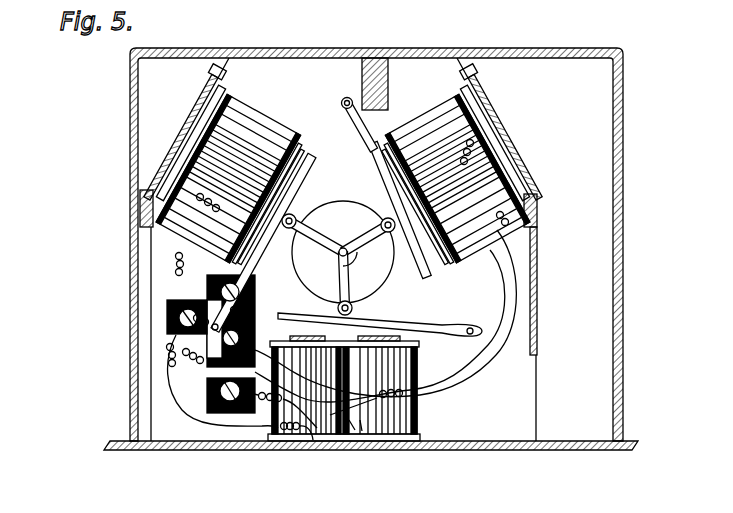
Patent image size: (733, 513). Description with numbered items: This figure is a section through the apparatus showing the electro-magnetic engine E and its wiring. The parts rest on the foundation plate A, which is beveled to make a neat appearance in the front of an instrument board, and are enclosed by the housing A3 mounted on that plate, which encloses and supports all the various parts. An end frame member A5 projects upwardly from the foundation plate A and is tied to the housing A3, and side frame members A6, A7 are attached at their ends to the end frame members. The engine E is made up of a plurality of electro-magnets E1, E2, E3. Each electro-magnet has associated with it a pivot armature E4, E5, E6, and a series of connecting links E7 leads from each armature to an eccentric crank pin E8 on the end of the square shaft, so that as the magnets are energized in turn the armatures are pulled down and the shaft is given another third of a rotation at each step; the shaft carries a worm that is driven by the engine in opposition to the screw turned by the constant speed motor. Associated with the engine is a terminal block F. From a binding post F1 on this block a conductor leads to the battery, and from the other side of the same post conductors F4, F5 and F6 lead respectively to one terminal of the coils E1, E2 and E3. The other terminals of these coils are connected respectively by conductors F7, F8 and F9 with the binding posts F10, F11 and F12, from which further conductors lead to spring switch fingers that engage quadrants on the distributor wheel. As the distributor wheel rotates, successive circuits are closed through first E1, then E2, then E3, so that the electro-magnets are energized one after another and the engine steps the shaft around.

The foundation plate A is at (513, 468).
The housing A3 is at (625, 138).
The end frame member A5 is at (518, 370).
The side frame member A6 is at (478, 113).
The side frame member A7 is at (208, 100).
The electro-magnetic engine E is at (372, 143).
The electro-magnet E1 is at (440, 207).
The electro-magnet E2 is at (232, 195).
The electro-magnet E3 is at (343, 432).
The pivot armature E4 is at (407, 258).
The pivot armature E5 is at (305, 181).
The pivot armature E6 is at (400, 326).
The connecting link E7 is at (371, 233).
The eccentric crank pin E8 is at (350, 257).
The terminal block F is at (212, 378).
The binding post F1 is at (208, 277).
The conductor F4 is at (463, 382).
The conductor F5 is at (185, 300).
The conductor F6 is at (243, 428).
The conductor F7 is at (502, 300).
The conductor F8 is at (172, 258).
The conductor F9 is at (366, 431).
The binding post F10 is at (257, 301).
The binding post F11 is at (262, 311).
The binding post F12 is at (252, 377).